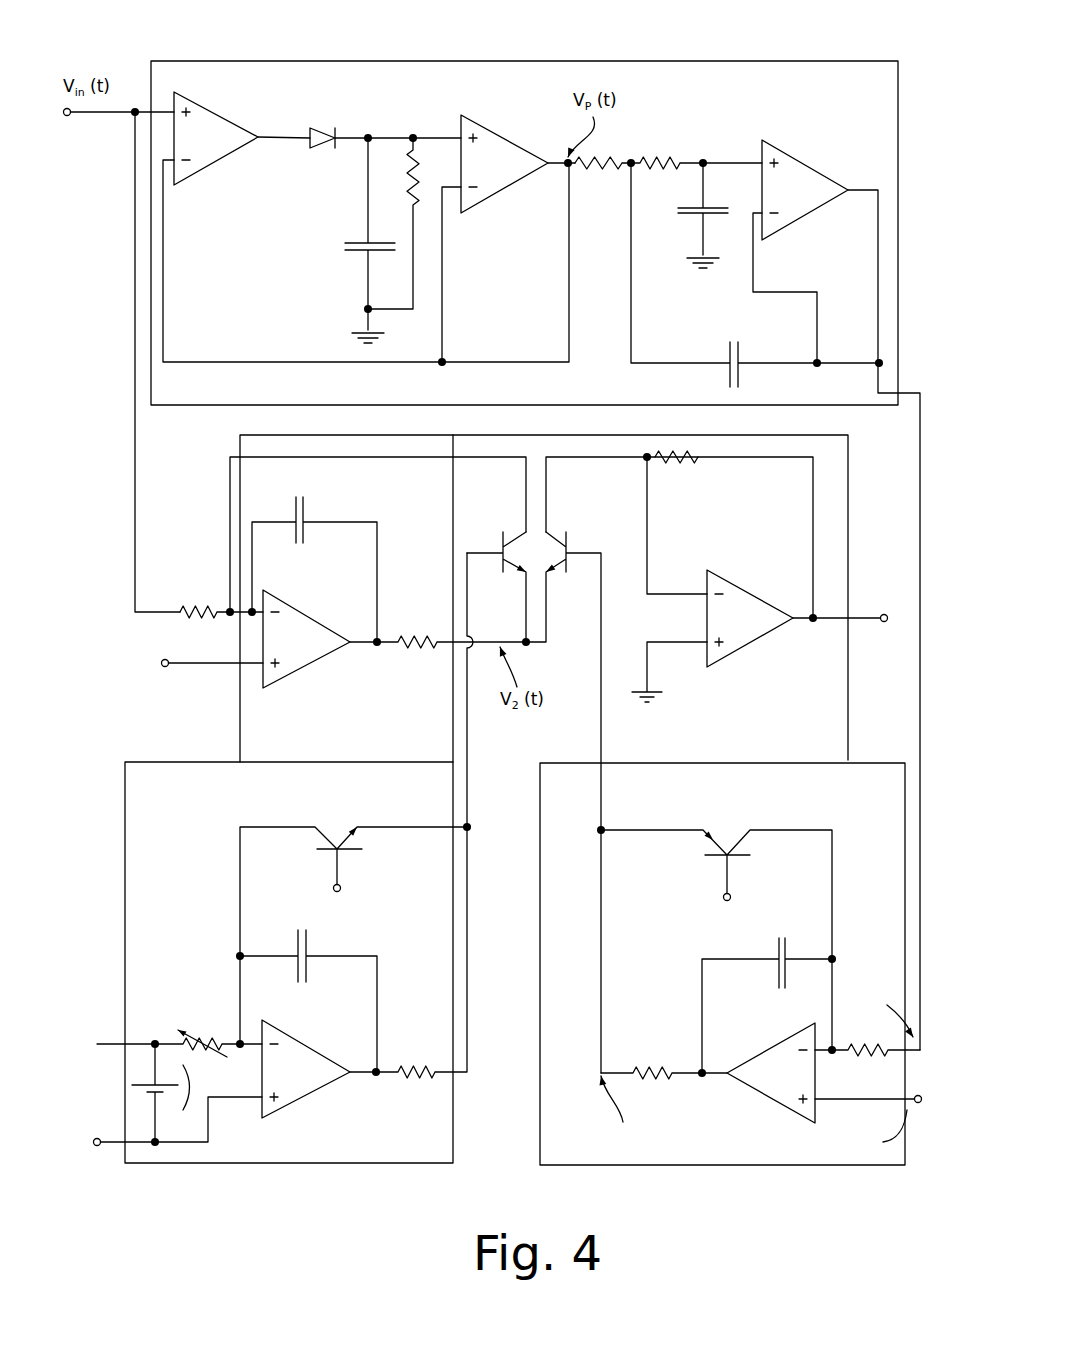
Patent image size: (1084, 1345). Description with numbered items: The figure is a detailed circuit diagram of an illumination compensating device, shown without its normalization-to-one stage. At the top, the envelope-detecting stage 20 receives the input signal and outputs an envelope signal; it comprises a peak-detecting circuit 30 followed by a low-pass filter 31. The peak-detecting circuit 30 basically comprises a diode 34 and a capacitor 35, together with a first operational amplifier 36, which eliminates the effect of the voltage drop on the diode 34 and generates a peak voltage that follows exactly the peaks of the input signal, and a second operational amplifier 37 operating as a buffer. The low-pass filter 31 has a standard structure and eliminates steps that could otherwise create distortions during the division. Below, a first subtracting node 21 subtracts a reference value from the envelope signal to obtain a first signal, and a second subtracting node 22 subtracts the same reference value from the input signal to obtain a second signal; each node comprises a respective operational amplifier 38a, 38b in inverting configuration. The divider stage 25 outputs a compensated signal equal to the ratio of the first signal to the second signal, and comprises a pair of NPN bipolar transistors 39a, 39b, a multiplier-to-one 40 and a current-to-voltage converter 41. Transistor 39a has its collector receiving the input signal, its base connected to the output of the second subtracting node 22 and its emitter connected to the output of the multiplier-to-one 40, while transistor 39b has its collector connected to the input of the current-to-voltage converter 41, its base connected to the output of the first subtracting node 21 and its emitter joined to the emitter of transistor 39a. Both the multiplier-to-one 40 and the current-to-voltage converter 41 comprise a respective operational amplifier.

The envelope-detecting stage 20 is at (788, 78).
The peak-detecting circuit 30 is at (369, 194).
The first operational amplifier 36 is at (225, 130).
The diode 34 is at (317, 150).
The capacitor 35 is at (345, 250).
The second operational amplifier 37 is at (505, 153).
The low-pass filter 31 is at (745, 130).
The second subtracting node 22 is at (267, 735).
The operational amplifier 38b is at (313, 637).
The bipolar transistor 39a is at (522, 530).
The bipolar transistor 39b is at (558, 538).
The current-to-voltage converter 41 is at (743, 585).
The divider stage 25 is at (485, 1127).
The multiplier-to-one 40 is at (350, 1097).
The first subtracting node 21 is at (567, 1150).
The operational amplifier 38a is at (762, 1087).